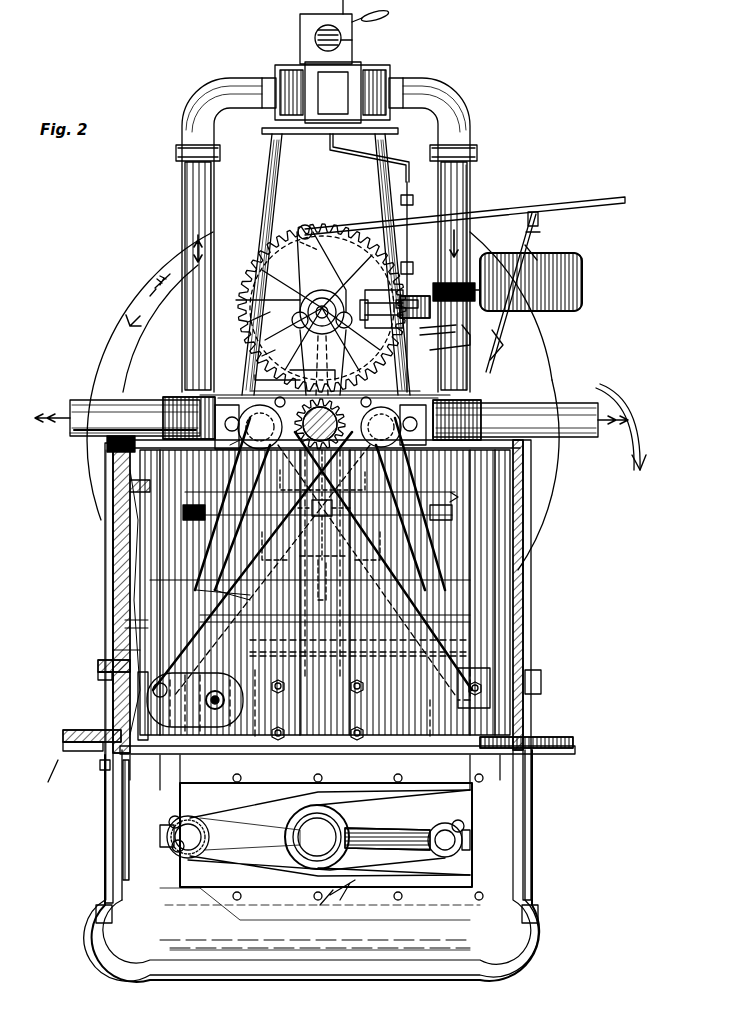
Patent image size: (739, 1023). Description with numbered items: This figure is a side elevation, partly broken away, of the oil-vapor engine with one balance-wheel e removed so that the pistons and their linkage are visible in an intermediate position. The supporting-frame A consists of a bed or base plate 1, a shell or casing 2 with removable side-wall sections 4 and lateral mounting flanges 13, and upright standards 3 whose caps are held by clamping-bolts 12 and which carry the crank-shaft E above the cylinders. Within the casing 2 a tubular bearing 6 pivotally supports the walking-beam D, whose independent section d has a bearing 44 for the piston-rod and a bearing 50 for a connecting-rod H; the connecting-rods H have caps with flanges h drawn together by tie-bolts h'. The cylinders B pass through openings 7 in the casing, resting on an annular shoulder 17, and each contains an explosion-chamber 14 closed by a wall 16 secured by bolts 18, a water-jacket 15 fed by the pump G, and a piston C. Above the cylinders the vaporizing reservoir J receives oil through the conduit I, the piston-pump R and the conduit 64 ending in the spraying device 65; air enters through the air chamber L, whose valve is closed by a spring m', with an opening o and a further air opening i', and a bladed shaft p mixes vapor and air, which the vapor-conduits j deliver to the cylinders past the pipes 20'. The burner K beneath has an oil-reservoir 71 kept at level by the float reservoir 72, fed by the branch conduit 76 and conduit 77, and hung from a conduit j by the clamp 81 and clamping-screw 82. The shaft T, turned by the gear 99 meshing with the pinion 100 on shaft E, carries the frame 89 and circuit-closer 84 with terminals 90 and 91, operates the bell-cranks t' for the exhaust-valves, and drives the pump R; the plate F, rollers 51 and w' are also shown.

The air-receiving chamber L is at (329, 32).
The spring m' is at (308, 28).
The armature i' is at (353, 39).
The opening o is at (342, 7).
The rotary shaft p is at (371, 11).
The reservoir J is at (332, 85).
The spraying device 65 is at (333, 93).
The vapor-conduits j is at (180, 210).
The plate F is at (262, 131).
The oil-burner K is at (326, 264).
The conduit 64 is at (366, 160).
The balance-wheels e is at (108, 330).
The circuit-closer 84 is at (262, 262).
The terminal 90 is at (257, 297).
The oil-reservoir 71 is at (248, 322).
The gear 99 is at (262, 356).
The shaft T is at (321, 313).
The rollers w' is at (321, 331).
The terminal 91 is at (298, 232).
The frame 89 is at (312, 228).
The bell-cranks t' is at (301, 368).
The piston-pump R is at (395, 330).
The clamping-screw 82 is at (415, 309).
The oil-reservoir 72 is at (531, 282).
The clamp 81 is at (466, 270).
The branch conduit 76 is at (538, 222).
The conduit 77 is at (455, 338).
The conduit I is at (616, 384).
The horizontal pipe 20' is at (331, 430).
The clamping-bolts 12 is at (325, 388).
The rollers 51 is at (266, 406).
The flanges h is at (313, 621).
The crank-shaft E is at (322, 539).
The pinion 100 is at (323, 530).
The upright standards 3 is at (321, 566).
The cylinders B is at (135, 580).
The bolts 18 is at (113, 560).
The wall 16 is at (113, 480).
The explosion-chamber 14 is at (142, 525).
The water-jacket 15 is at (113, 543).
The piston C is at (125, 624).
The annular shoulder 17 is at (113, 652).
The openings 7 is at (98, 668).
The supporting-frame A is at (311, 556).
The bearing-faces 44 is at (230, 450).
The connecting-rods H is at (260, 618).
The tie-bolts h' is at (360, 646).
The pump G is at (240, 700).
The flanges 13 is at (128, 736).
The base plate 1 is at (49, 782).
The walking-beam D is at (331, 845).
The bearing 50 is at (210, 830).
The walking-beam section d is at (250, 834).
The tubular bearing 6 is at (335, 838).
The side-wall sections 4 is at (105, 836).
The shell or casing 2 is at (315, 919).